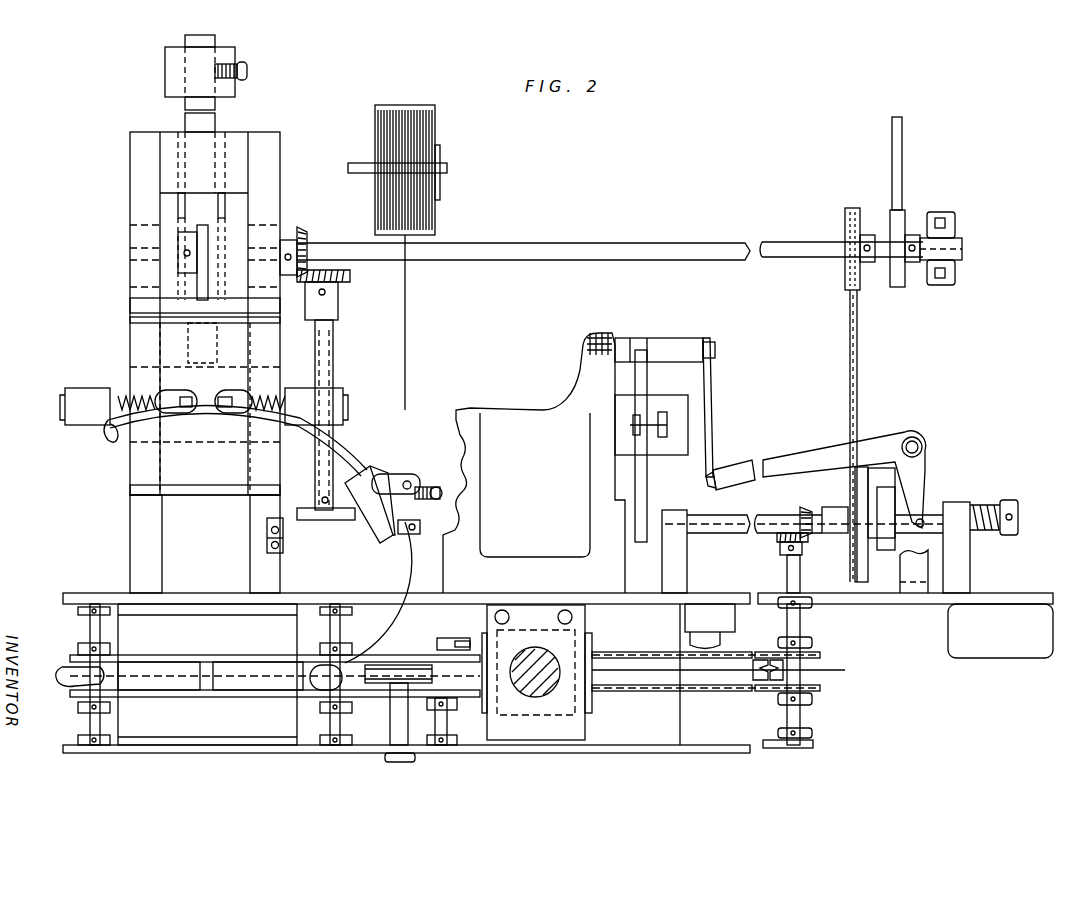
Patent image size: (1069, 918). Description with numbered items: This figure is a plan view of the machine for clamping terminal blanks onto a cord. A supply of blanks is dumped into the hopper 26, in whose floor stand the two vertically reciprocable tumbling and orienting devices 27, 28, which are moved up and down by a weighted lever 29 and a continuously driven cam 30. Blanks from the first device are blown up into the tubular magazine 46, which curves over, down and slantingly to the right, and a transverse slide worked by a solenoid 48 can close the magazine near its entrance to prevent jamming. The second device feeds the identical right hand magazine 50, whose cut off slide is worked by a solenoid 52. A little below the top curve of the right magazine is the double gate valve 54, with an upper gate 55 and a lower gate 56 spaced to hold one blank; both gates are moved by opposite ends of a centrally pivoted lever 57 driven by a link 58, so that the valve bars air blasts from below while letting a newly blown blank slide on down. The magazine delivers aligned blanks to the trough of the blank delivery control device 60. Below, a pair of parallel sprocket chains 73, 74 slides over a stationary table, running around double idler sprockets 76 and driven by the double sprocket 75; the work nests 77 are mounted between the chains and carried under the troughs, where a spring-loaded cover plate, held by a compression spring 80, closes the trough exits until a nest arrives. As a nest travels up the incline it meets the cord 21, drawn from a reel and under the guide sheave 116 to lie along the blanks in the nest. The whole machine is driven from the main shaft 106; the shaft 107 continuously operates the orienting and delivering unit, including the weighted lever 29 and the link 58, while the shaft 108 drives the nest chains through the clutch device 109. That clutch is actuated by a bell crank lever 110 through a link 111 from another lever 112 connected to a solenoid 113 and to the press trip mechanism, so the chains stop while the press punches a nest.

The cord 21 is at (408, 318).
The hopper 26 is at (160, 335).
The tumbling and orienting device 27 is at (190, 420).
The tumbling and orienting device 28 is at (232, 420).
The weighted lever 29 is at (210, 122).
The cam 30 is at (205, 280).
The tubular magazine 46 is at (108, 440).
The solenoid 48 is at (85, 400).
The right hand magazine 50 is at (338, 445).
The solenoid 52 is at (330, 388).
The double gate valve 54 is at (357, 530).
The upper gate 55 is at (395, 474).
The lower gate 56 is at (400, 535).
The centrally pivoted lever 57 is at (428, 487).
The link 58 is at (320, 522).
The blank delivery control device 60 is at (177, 703).
The sprocket chain 73 is at (740, 652).
The sprocket chain 74 is at (722, 692).
The double sprocket 75 is at (805, 640).
The double idler sprocket 76 is at (85, 640).
The work nest 77 is at (765, 692).
The compression spring 80 is at (435, 110).
The main shaft 106 is at (505, 243).
The shaft 107 is at (333, 360).
The shaft 108 is at (787, 568).
The clutch device 109 is at (885, 565).
The bell crank lever 110 is at (745, 470).
The link 111 is at (712, 410).
The lever 112 is at (640, 340).
The solenoid 113 is at (678, 450).
The guide sheave 116 is at (414, 665).